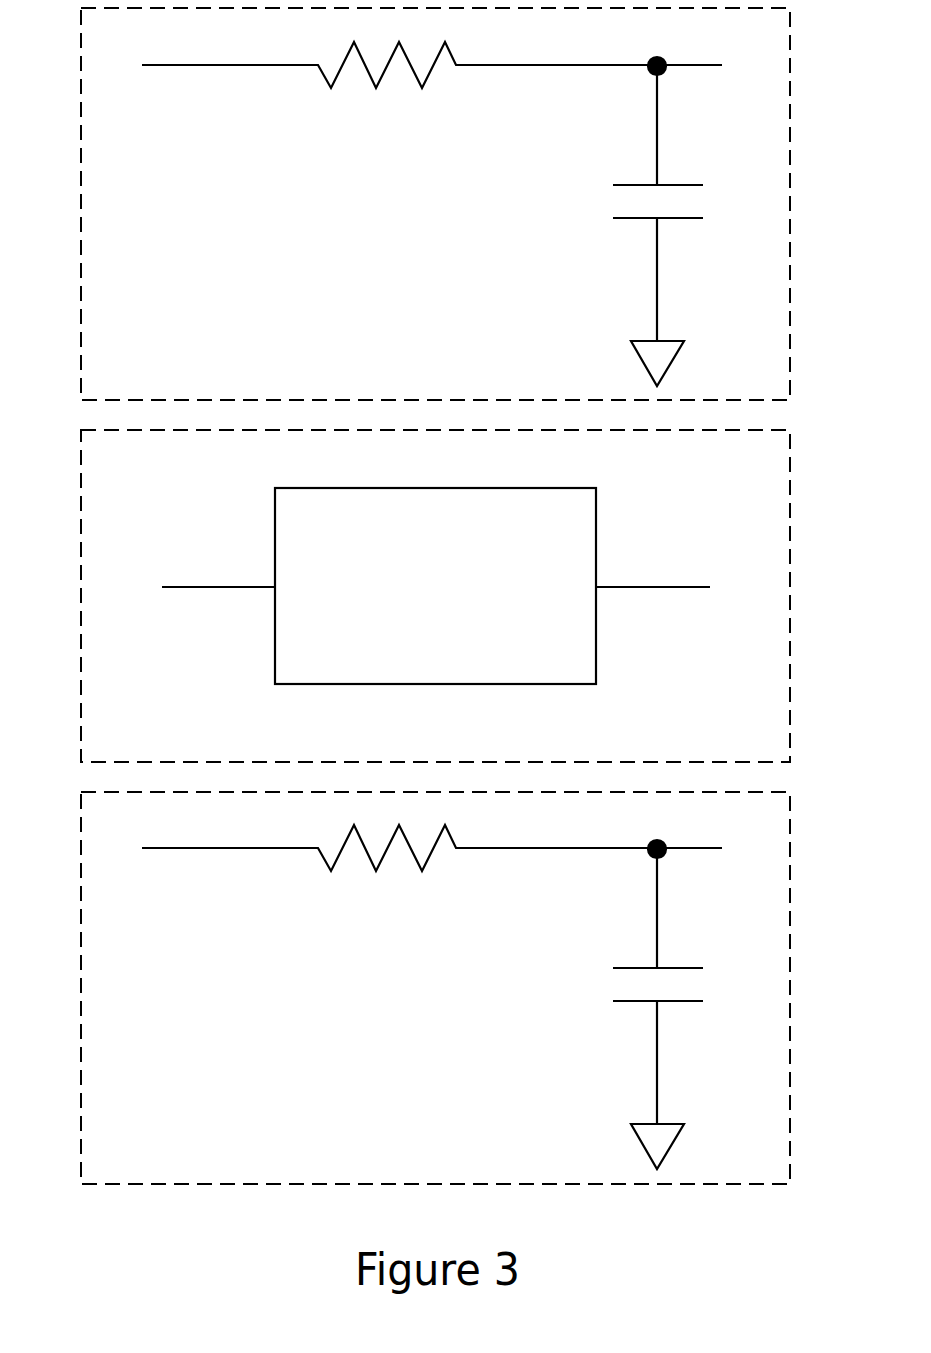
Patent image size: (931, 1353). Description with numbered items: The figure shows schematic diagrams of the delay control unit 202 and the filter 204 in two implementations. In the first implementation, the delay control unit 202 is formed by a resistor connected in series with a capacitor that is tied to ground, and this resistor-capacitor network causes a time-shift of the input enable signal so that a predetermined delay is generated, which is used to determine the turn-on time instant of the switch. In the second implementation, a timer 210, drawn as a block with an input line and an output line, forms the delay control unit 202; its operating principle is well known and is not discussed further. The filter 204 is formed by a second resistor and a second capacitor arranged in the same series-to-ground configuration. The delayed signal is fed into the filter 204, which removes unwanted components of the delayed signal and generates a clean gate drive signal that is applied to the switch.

The delay control unit 202 is at (435, 385).
The filter 204 is at (443, 1165).
The timer 210 is at (462, 645).